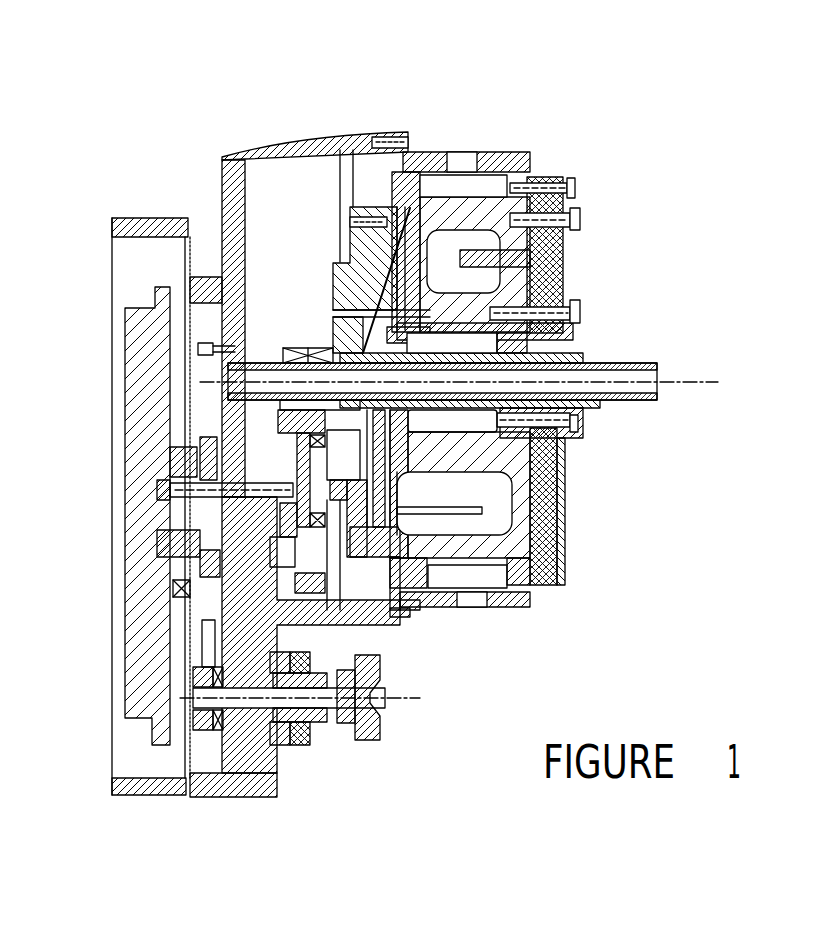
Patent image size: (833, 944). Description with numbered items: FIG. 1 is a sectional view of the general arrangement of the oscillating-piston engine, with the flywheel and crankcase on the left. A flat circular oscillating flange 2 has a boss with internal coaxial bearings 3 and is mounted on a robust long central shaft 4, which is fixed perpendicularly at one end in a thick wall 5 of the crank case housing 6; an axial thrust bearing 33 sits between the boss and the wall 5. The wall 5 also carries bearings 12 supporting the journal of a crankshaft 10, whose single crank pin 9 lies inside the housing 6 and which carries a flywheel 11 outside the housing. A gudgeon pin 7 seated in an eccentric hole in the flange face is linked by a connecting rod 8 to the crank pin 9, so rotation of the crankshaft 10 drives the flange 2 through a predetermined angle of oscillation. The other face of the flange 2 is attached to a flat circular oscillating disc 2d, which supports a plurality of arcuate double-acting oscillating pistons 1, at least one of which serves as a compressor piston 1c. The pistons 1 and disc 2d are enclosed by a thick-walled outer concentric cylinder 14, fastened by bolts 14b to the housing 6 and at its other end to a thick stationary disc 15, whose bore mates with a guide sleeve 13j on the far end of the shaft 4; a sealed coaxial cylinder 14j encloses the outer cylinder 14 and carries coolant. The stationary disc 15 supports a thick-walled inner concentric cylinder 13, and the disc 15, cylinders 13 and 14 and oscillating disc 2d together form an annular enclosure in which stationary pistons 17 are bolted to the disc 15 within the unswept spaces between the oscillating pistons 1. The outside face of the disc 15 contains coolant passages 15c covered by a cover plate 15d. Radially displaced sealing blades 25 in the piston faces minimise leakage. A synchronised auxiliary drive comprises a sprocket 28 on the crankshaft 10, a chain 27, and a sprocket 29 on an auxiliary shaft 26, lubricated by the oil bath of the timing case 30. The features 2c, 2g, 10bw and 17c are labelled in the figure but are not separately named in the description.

The oscillating pistons 1 is at (572, 470).
The oscillating compressor piston 1c is at (573, 502).
The oscillating flange 2 is at (347, 262).
The housing cylindrical part 2c is at (573, 518).
The oscillating disc 2d is at (380, 350).
The housing flange 2g is at (393, 623).
The internal coaxial bearings 3 is at (307, 345).
The long central shaft 4 is at (630, 362).
The thick wall 5 is at (237, 190).
The crank case housing 6 is at (300, 137).
The gudgeon pin 7 is at (300, 450).
The connecting rod 8 is at (300, 587).
The crank pin 9 is at (340, 545).
The crankshaft 10 is at (255, 506).
The bolt washer 10bw is at (300, 463).
The flywheel 11 is at (147, 705).
The bearings 12 is at (280, 474).
The inner concentric cylinder 13 is at (572, 447).
The guide sleeve 13j is at (590, 412).
The outer concentric cylinder 14 is at (557, 587).
The bolts 14b is at (400, 622).
The sealed coaxial cylinder 14j is at (425, 608).
The stationary disc 15 is at (573, 538).
The coolant passages 15c is at (545, 243).
The cover plate 15d is at (572, 555).
The stationary piston 17 is at (497, 292).
The armature plate 17c is at (447, 262).
The radial displaced sealing blades 25 is at (340, 720).
The auxiliary shaft 26 is at (243, 748).
The chain 27 is at (300, 593).
The sprocket 28 is at (300, 572).
The sprocket 29 is at (245, 642).
The timing case 30 is at (200, 758).
The axial thrust bearing 33 is at (150, 222).